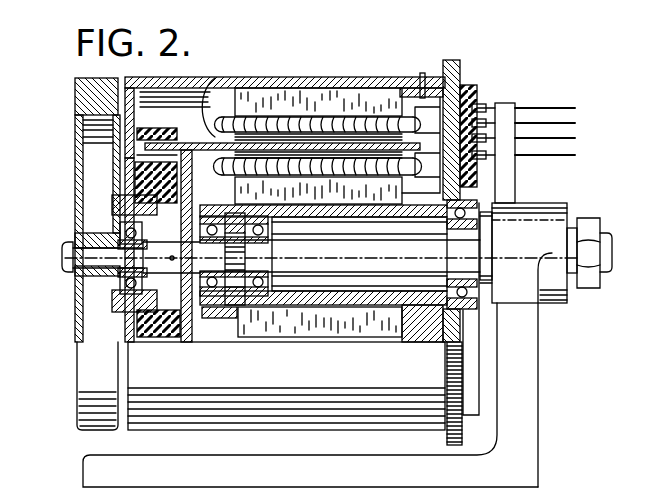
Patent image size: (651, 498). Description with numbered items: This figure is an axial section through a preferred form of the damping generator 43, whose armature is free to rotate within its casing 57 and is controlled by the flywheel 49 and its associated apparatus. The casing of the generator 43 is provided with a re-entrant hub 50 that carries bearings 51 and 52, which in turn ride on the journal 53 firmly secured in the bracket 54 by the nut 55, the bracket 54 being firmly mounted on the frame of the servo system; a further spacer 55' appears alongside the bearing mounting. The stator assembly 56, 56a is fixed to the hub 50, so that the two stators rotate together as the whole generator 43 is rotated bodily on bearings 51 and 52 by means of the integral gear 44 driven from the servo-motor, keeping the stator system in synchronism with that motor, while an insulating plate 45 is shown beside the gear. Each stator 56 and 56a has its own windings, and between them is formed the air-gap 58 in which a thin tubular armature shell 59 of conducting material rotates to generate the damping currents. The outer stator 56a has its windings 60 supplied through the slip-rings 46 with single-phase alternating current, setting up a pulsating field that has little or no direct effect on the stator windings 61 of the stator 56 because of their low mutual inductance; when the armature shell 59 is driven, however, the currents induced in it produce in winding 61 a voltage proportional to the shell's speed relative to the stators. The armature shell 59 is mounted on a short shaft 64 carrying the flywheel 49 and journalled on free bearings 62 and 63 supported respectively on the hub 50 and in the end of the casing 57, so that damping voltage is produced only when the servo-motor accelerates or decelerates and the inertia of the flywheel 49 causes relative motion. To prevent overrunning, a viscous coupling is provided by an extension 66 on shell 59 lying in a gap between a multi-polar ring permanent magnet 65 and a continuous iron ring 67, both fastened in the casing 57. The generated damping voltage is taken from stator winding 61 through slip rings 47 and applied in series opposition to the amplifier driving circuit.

The damping generator 43 is at (259, 76).
The integral gear 44 is at (443, 78).
The insulating plate 45 is at (464, 85).
The slip-rings 46 is at (478, 116).
The slip rings 47 is at (474, 150).
The flywheel 49 is at (75, 96).
The re-entrant hub 50 is at (443, 312).
The bearing 51 is at (478, 293).
The bearing 52 is at (259, 287).
The journal 53 is at (369, 253).
The bracket 54 is at (527, 367).
The nut 55 is at (606, 240).
The spacer 55' is at (213, 339).
The stator 56 is at (347, 187).
The outer stator 56a is at (328, 97).
The casing 57 is at (285, 83).
The air-gap 58 is at (214, 78).
The tubular armature shell 59 is at (193, 142).
The windings 60 is at (298, 127).
The stator windings 61 is at (365, 160).
The free bearing 62 is at (214, 287).
The free bearing 63 is at (126, 285).
The short shaft 64 is at (85, 256).
The multi-polar ring permanent magnet 65 is at (126, 181).
The extension 66 is at (147, 148).
The continuous iron ring 67 is at (137, 134).